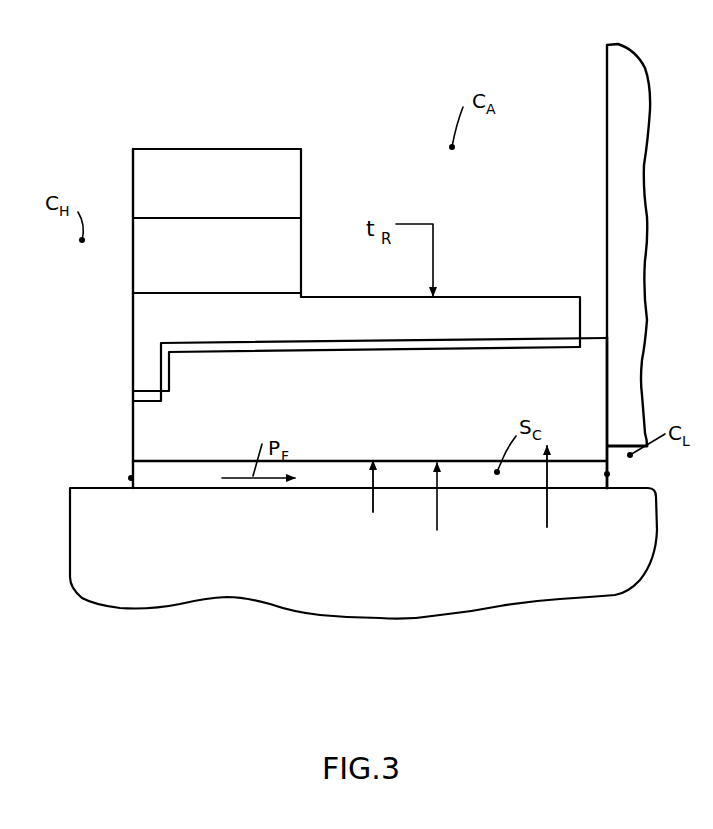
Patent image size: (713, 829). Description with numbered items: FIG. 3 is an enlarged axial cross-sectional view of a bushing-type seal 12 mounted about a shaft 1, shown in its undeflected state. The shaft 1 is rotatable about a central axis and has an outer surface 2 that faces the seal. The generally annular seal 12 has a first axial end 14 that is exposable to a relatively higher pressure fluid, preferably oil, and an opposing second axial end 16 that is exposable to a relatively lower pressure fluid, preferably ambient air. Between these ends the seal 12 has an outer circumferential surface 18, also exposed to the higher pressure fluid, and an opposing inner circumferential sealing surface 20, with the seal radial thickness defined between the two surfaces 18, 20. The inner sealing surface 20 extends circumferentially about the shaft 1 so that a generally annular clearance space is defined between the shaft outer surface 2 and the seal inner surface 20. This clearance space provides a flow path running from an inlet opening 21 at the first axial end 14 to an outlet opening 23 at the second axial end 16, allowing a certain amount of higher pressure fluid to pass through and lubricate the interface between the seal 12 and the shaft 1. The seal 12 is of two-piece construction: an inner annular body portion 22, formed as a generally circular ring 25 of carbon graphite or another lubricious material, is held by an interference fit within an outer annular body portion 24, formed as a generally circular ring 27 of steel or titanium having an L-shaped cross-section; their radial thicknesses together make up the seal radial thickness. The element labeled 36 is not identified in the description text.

The shaft 1 is at (569, 593).
The outer surface 2 is at (193, 482).
The seal 12 is at (408, 193).
The first axial end 14 is at (132, 378).
The second axial end 16 is at (608, 383).
The outer circumferential surface 18 is at (474, 294).
The inner circumferential sealing surface 20 is at (373, 512).
The inlet opening 21 is at (131, 478).
The inner annular body portion 22 is at (547, 502).
The outlet opening 23 is at (607, 474).
The outer annular body portion 24 is at (524, 295).
The circular ring 25 is at (322, 447).
The circular ring 27 is at (327, 315).
The wall 36 is at (607, 110).